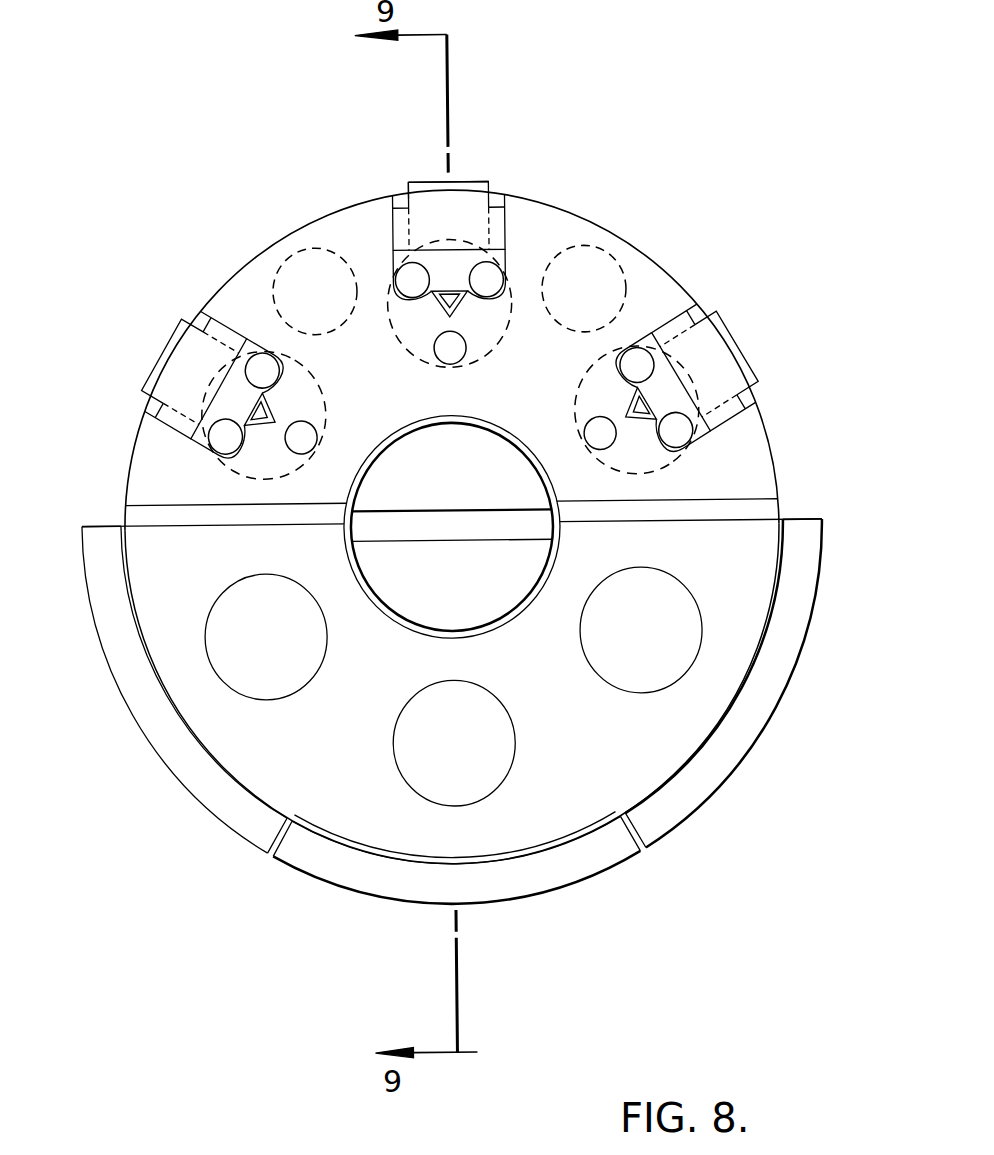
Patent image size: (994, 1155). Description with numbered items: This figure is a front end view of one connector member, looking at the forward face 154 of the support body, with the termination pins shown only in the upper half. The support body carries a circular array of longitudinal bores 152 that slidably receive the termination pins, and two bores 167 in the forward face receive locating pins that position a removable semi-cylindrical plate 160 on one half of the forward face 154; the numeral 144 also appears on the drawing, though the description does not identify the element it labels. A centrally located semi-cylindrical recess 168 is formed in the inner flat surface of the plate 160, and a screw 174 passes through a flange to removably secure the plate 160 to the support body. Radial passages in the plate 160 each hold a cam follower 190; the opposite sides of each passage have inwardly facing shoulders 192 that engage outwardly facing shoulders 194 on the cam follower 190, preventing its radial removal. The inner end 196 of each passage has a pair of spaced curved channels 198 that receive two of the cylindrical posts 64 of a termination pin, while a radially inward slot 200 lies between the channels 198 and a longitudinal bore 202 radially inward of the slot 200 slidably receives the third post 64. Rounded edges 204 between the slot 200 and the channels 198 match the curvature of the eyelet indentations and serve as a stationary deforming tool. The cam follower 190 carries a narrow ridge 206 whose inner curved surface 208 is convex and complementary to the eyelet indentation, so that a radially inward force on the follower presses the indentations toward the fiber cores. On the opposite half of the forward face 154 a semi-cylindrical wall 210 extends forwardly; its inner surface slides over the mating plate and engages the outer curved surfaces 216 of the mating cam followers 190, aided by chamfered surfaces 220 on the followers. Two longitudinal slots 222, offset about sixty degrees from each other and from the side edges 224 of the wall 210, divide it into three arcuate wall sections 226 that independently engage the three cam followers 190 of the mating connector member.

The cylindrical posts 64 is at (263, 352).
The locating key 144 is at (130, 438).
The longitudinal bores 152 is at (453, 688).
The forward face 154 is at (135, 570).
The semi-cylindrical plate 160 is at (745, 455).
The bores 167 is at (603, 262).
The semi-cylindrical recess 168 is at (383, 578).
The screw 174 is at (520, 567).
The cam follower 190 is at (463, 205).
The inwardly facing shoulders 192 is at (392, 216).
The outwardly facing shoulders 194 is at (398, 195).
The inner end of the passage 196 is at (262, 456).
The curved channels 198 is at (278, 372).
The longitudinal slot 200 is at (327, 424).
The longitudinal bore 202 is at (312, 458).
The rounded edges 204 is at (446, 302).
The ridge 206 is at (420, 296).
The inner curved surface 208 is at (482, 297).
The semi-cylindrical wall 210 is at (790, 715).
The outer curved surfaces 216 is at (457, 181).
The chamfered surfaces 220 is at (436, 181).
The longitudinal slots 222 is at (273, 832).
The side edges 224 is at (100, 508).
The arcuate wall sections 226 is at (168, 757).